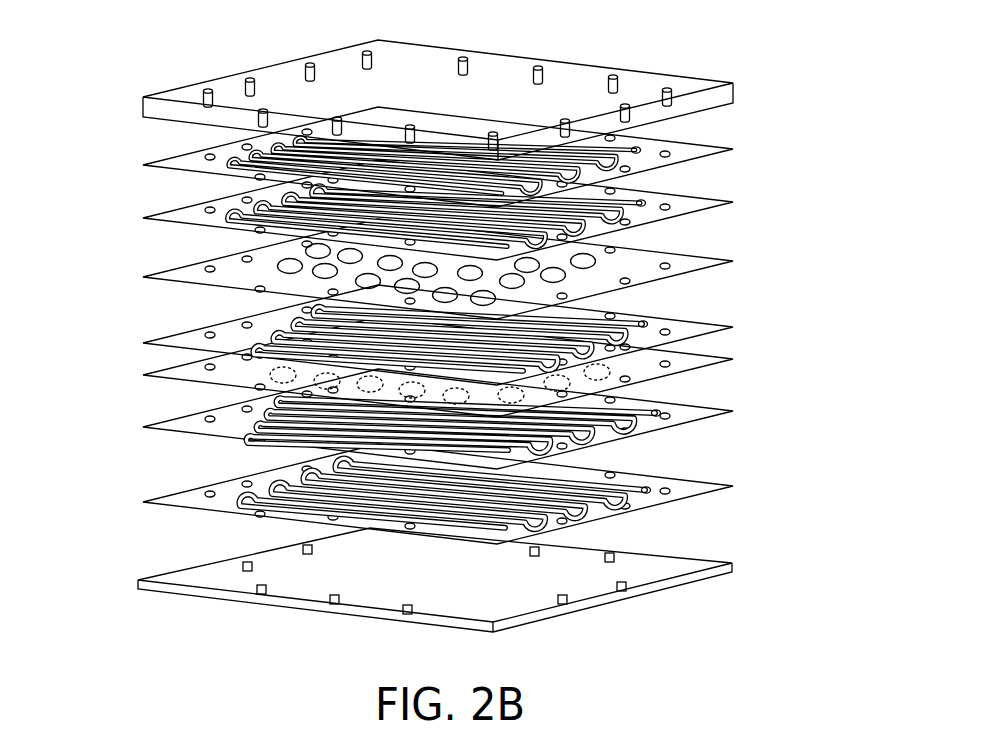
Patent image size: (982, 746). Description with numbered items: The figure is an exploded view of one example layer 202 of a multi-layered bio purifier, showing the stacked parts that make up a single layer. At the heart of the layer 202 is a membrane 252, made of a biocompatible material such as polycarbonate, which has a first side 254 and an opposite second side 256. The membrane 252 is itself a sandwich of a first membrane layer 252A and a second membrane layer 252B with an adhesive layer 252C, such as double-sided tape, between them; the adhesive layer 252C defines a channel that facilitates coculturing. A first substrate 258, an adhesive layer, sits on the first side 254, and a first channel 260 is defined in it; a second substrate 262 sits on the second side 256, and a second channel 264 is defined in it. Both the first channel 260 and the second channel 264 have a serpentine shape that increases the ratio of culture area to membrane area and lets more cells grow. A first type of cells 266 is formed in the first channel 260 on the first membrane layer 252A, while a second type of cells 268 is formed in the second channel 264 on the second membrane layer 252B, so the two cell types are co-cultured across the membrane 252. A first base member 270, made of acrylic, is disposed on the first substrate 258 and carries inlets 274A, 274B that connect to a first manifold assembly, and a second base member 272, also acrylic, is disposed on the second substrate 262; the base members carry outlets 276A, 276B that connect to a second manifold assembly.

The layer 202 is at (670, 634).
The membrane 252 is at (866, 262).
The first membrane layer 252A is at (722, 260).
The second membrane layer 252B is at (730, 358).
The adhesive layer 252C is at (730, 326).
The first side 254 is at (706, 237).
The second side 256 is at (722, 384).
The first substrate 258 is at (729, 149).
The first channel 260 is at (205, 225).
The second substrate 262 is at (730, 410).
The second channel 264 is at (192, 495).
The first type of cells 266 is at (300, 240).
The second type of cells 268 is at (272, 386).
The first base member 270 is at (265, 67).
The second base member 272 is at (205, 578).
The inlet 274A is at (368, 52).
The inlet 274B is at (668, 89).
The outlet 276A is at (211, 91).
The outlet 276B is at (494, 133).